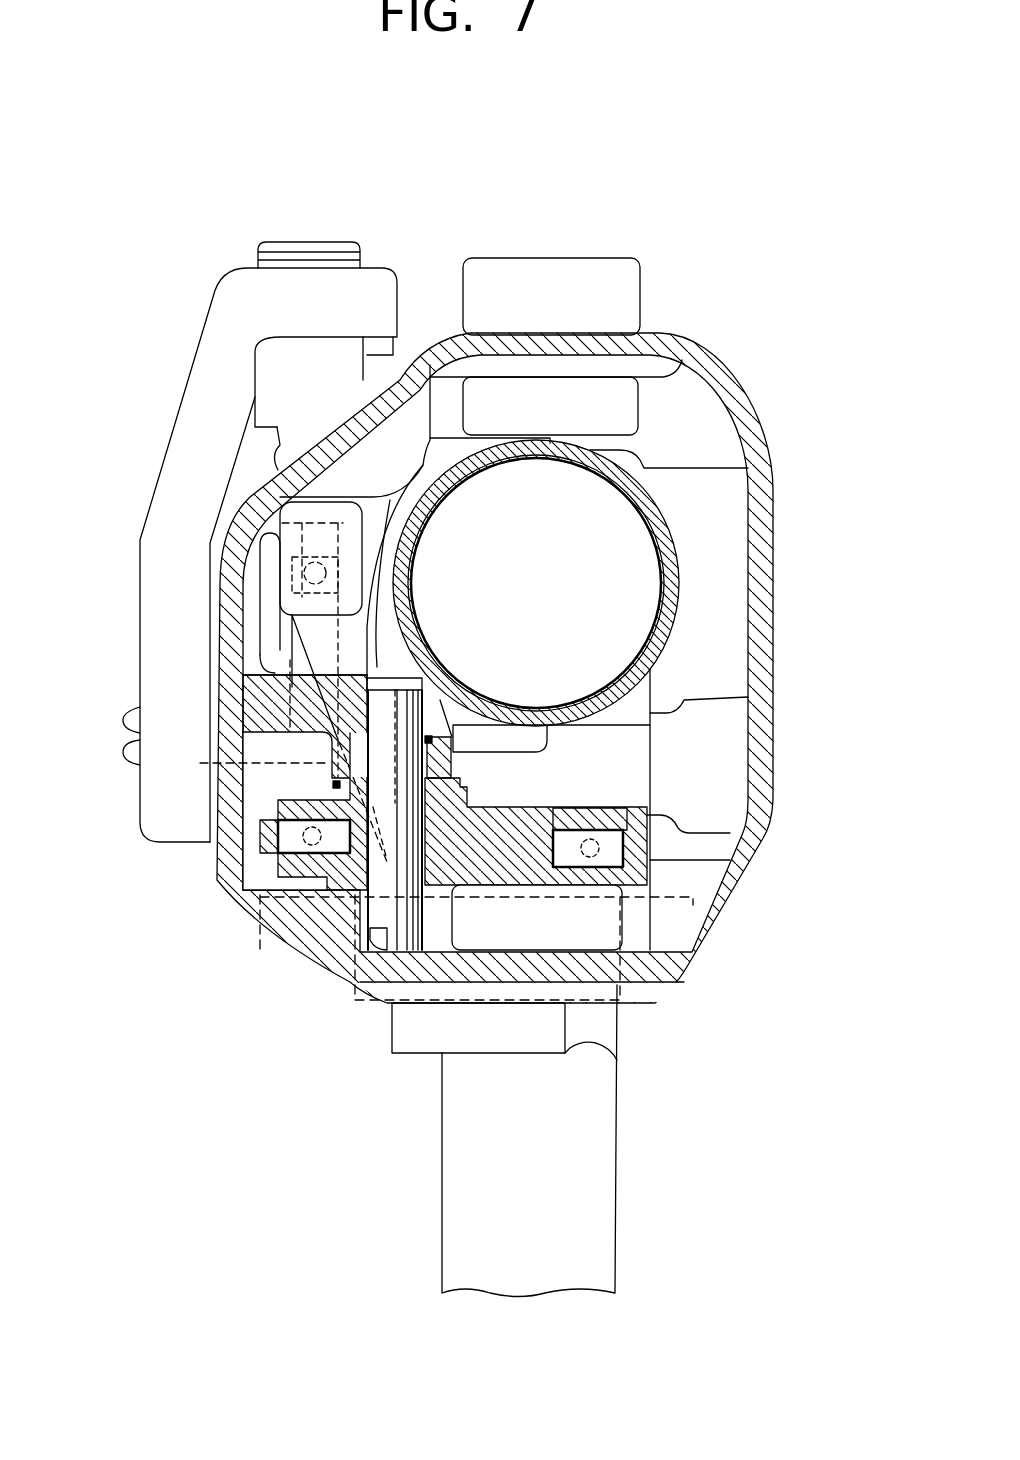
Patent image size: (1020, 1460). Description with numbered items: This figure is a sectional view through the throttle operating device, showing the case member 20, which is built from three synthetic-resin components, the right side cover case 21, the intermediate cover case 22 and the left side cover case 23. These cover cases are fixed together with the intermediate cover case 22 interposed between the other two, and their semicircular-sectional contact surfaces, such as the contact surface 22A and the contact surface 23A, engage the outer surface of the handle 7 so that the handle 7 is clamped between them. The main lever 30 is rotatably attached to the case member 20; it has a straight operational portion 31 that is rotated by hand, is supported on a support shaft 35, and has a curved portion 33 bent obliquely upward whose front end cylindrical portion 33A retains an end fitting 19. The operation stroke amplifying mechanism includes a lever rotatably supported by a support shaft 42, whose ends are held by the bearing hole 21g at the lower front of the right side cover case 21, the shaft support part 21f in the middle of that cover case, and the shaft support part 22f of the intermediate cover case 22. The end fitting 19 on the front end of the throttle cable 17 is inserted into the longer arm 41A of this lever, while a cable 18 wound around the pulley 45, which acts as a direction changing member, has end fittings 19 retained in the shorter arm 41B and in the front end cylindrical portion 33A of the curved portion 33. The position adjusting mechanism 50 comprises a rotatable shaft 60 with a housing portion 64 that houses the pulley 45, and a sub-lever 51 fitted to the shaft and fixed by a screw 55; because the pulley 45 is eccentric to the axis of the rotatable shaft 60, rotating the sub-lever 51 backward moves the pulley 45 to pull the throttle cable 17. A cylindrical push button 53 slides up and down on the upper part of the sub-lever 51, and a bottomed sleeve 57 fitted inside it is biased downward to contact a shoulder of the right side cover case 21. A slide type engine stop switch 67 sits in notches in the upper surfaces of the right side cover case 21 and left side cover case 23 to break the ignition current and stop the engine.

The handle 7 is at (665, 540).
The throttle cable 17 is at (590, 838).
The cable 18 is at (290, 535).
The end fitting 19 is at (280, 835).
The case member 20 is at (712, 372).
The right side cover case 21 is at (437, 345).
The shaft support part 21f is at (437, 736).
The bearing hole 21g is at (358, 975).
The intermediate cover case 22 is at (432, 505).
The contact surface 22A is at (423, 470).
The shaft support part 22f is at (453, 705).
The left side cover case 23 is at (660, 335).
The contact surface 23A is at (690, 585).
The main lever 30 is at (617, 1165).
The operational portion 31 is at (455, 1175).
The curved portion 33 is at (355, 633).
The front end cylindrical portion 33A is at (412, 562).
The support shaft 35 is at (292, 972).
The longer arm 41A is at (505, 820).
The shorter arm 41B is at (265, 875).
The support shaft 42 is at (380, 955).
The pulley 45 is at (250, 775).
The position adjusting mechanism 50 is at (137, 675).
The sub-lever 51 is at (205, 377).
The push button 53 is at (313, 240).
The screw 55 is at (125, 752).
The sleeve 57 is at (278, 437).
The rotatable shaft 60 is at (320, 645).
The housing portion 64 is at (300, 580).
The engine stop switch 67 is at (550, 270).